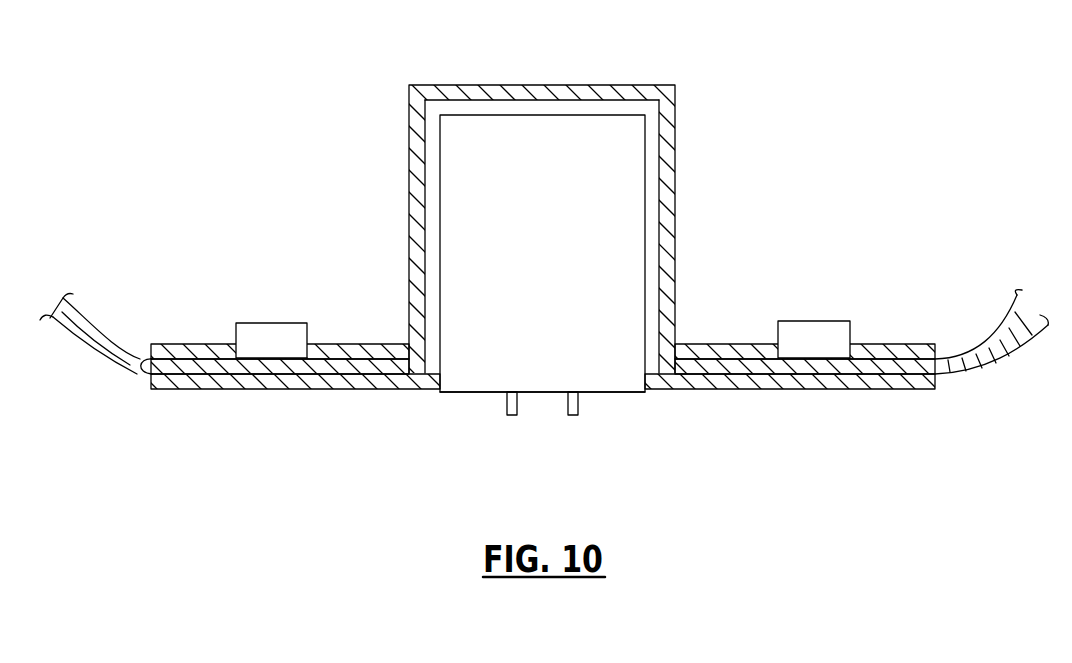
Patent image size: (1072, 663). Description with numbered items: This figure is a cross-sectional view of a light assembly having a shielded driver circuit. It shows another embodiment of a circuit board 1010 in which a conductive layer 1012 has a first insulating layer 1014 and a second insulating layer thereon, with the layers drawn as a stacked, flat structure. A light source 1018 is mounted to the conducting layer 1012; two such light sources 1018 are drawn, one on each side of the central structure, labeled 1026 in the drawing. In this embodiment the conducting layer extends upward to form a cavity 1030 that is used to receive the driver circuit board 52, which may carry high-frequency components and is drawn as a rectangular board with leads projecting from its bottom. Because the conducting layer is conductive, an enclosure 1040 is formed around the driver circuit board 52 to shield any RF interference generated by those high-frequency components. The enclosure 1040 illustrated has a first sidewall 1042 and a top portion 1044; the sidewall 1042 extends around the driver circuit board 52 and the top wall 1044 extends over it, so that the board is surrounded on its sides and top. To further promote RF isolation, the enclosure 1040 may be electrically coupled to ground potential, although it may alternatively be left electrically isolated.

The circuit board 1010 is at (128, 373).
The conductive layer 1012 is at (142, 362).
The first insulating layer 1014 is at (175, 387).
The light source 1018 is at (265, 322).
The upper plate 1026 is at (163, 347).
The cavity 1030 is at (578, 108).
The enclosure 1040 is at (439, 90).
The first sidewall 1042 is at (408, 123).
The top portion 1044 is at (523, 92).
The driver circuit board 52 is at (463, 380).